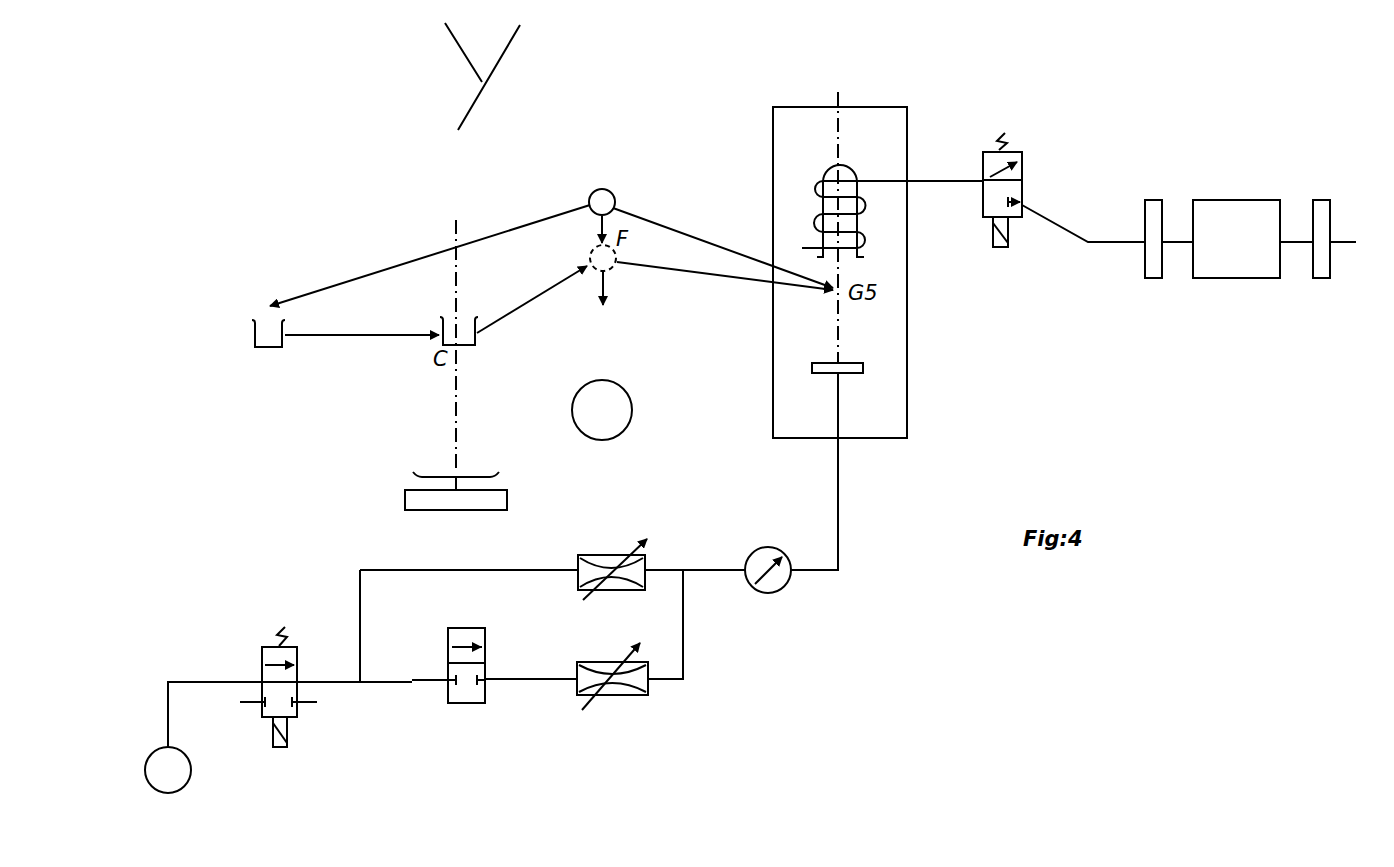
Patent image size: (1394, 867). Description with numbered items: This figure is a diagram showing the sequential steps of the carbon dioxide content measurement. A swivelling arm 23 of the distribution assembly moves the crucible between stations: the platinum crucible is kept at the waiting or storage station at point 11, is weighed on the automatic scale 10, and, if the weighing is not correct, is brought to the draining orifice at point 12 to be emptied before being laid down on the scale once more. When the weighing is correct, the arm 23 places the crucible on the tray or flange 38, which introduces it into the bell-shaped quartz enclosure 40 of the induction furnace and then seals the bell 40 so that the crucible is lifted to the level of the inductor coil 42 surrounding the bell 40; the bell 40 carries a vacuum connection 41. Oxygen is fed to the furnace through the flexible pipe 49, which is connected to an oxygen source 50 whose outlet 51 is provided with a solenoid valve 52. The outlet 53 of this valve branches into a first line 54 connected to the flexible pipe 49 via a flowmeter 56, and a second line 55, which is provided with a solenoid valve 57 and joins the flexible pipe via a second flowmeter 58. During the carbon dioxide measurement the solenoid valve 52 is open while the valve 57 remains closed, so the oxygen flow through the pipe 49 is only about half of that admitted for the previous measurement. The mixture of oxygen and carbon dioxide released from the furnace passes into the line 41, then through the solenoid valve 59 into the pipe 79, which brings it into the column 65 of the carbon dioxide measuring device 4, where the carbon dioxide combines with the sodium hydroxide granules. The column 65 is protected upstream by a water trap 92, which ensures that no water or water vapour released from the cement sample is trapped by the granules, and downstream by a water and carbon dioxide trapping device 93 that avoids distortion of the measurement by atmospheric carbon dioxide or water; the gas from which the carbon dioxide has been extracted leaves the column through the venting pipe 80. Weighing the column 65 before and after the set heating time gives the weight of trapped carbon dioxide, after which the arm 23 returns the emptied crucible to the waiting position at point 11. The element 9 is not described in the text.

The deflection mirror pair 9 is at (497, 54).
The waiting or storage station point 11 is at (268, 327).
The draining orifice point 12 is at (615, 414).
The automatic scale 10 is at (507, 503).
The bell-shaped quartz enclosure 40 is at (830, 170).
The vacuum connection 41 is at (940, 172).
The inductor coil 42 is at (865, 206).
The flange 38 is at (863, 370).
The flexible pipe 49 is at (842, 523).
The flowmeter 56 is at (577, 583).
The swivelling arm 23 is at (640, 594).
The second flowmeter 58 is at (577, 693).
The solenoid valve 57 is at (470, 705).
The first line 54 is at (365, 626).
The outlet 53 is at (345, 685).
The second line 55 is at (412, 685).
The solenoid valve 52 is at (298, 654).
The outlet 51 is at (170, 725).
The oxygen source 50 is at (191, 773).
The solenoid valve 59 is at (982, 199).
The flexible pipe 79 is at (1060, 223).
The water trap 92 is at (1152, 260).
The column 65 is at (1233, 213).
The carbon dioxide measuring device 4 is at (1233, 267).
The water and carbon dioxide trapping device 93 is at (1320, 267).
The flexible pipe 80 is at (1347, 237).